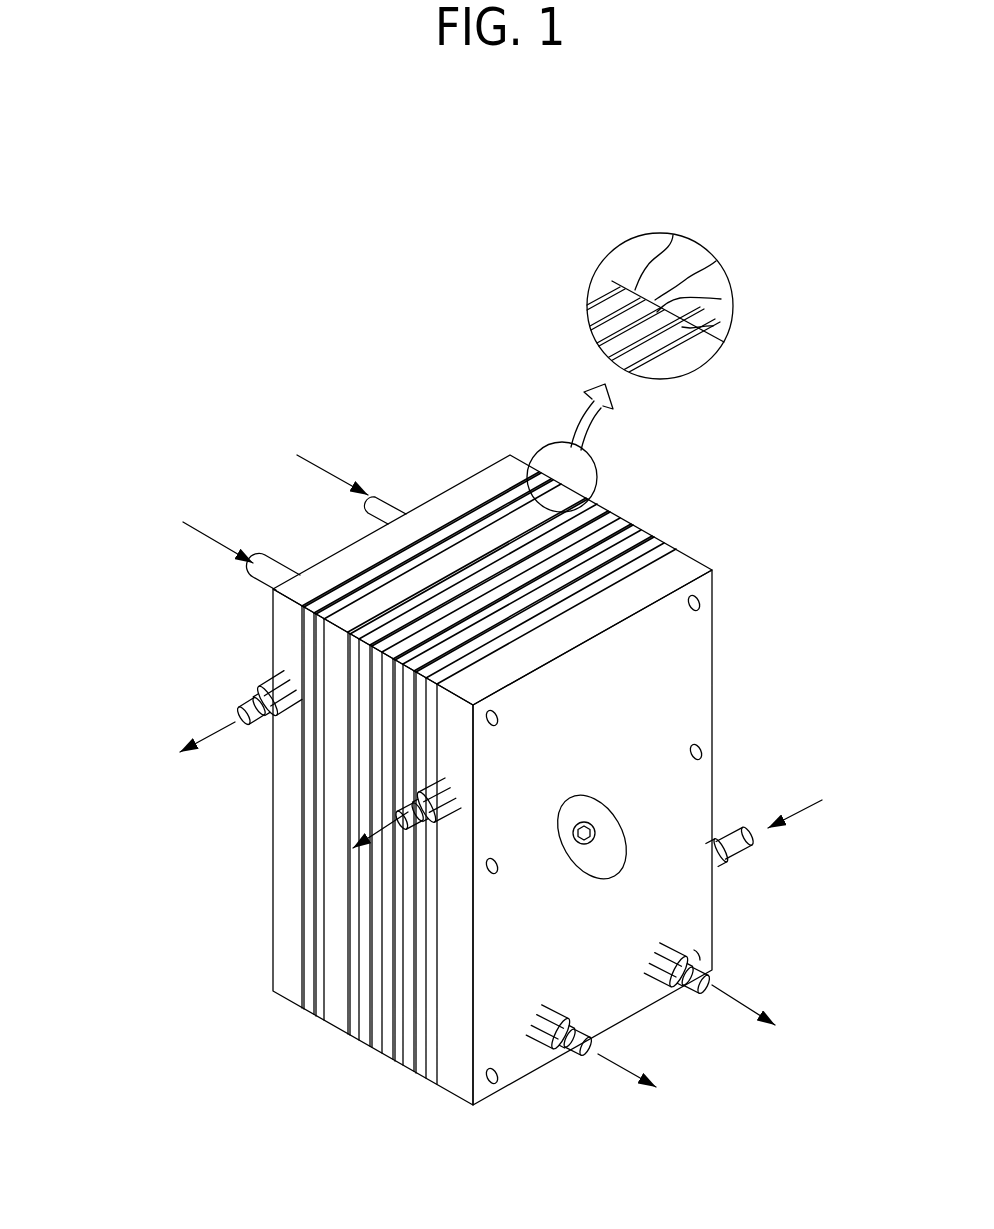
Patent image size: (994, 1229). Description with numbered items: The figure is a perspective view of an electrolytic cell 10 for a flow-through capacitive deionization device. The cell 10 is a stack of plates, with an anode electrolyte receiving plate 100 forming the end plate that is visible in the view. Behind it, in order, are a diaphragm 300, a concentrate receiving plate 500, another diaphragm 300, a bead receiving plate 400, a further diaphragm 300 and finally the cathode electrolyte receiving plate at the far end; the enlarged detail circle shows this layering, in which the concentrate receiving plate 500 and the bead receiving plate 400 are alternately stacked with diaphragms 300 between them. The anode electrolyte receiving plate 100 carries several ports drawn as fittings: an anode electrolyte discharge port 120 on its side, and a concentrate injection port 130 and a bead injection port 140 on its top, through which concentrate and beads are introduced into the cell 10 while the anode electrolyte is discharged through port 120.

The electrolytic cell 10 is at (475, 333).
The anode electrolyte receiving plate 100 is at (445, 497).
The anode electrolyte discharge port 120 is at (250, 702).
The concentrate injection port 130 is at (387, 495).
The bead injection port 140 is at (253, 567).
The diaphragm 300 is at (672, 240).
The bead receiving plate 400 is at (722, 254).
The concentrate receiving plate 500 is at (618, 265).